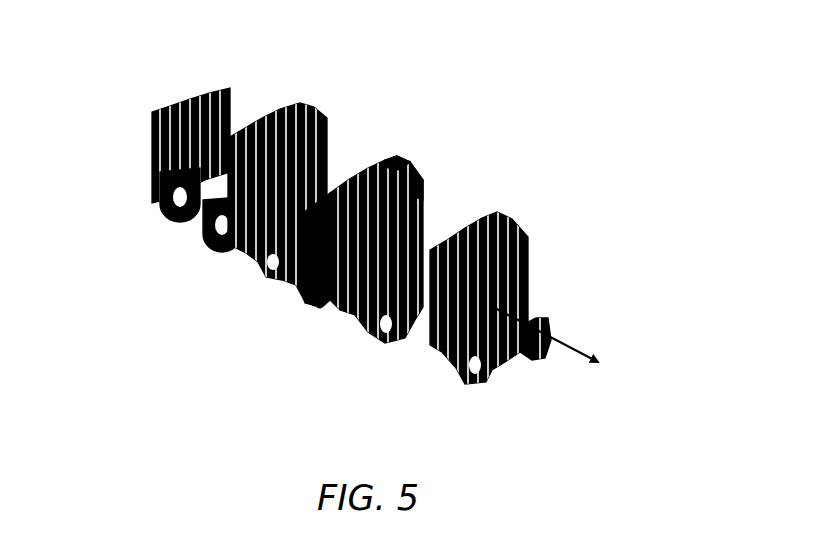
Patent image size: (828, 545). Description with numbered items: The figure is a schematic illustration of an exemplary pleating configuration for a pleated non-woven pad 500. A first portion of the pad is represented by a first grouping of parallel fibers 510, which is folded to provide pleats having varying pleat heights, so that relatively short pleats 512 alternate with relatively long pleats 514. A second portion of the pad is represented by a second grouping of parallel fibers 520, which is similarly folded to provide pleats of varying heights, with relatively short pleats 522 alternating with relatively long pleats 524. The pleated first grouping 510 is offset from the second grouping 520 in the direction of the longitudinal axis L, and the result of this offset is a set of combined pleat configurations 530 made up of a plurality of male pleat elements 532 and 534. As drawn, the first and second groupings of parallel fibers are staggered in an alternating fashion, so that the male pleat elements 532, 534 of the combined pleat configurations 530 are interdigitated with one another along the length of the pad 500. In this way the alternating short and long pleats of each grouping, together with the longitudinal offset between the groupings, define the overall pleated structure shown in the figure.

The pleated non-woven pad 500 is at (510, 157).
The first grouping of parallel fibers 510 is at (160, 110).
The relatively short pleats 512 is at (203, 200).
The relatively long pleats 514 is at (357, 215).
The second grouping of parallel fibers 520 is at (540, 320).
The relatively short pleats 522 is at (178, 187).
The relatively long pleats 524 is at (233, 133).
The combined pleat configurations 530 is at (420, 158).
The male pleat element 532 is at (423, 176).
The male pleat element 534 is at (394, 160).